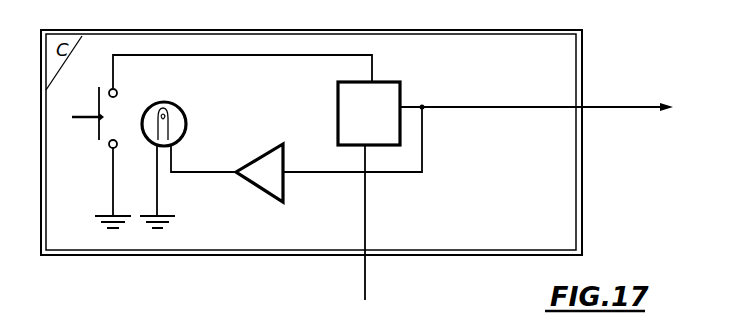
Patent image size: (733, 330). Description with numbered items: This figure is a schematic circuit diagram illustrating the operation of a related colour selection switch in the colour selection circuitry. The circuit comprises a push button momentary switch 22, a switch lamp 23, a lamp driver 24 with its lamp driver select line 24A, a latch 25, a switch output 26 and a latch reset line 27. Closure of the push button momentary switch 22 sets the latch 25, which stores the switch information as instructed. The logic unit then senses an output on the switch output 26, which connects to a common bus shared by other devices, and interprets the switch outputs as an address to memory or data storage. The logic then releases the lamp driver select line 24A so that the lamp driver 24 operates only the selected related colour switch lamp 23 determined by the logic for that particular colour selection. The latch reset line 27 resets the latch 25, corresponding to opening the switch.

The push button momentary switch 22 is at (101, 157).
The switch lamp 23 is at (188, 165).
The lamp driver 24 is at (259, 173).
The lamp driver select line 24A is at (254, 257).
The latch 25 is at (369, 113).
The switch output 26 is at (536, 97).
The latch reset line 27 is at (355, 236).